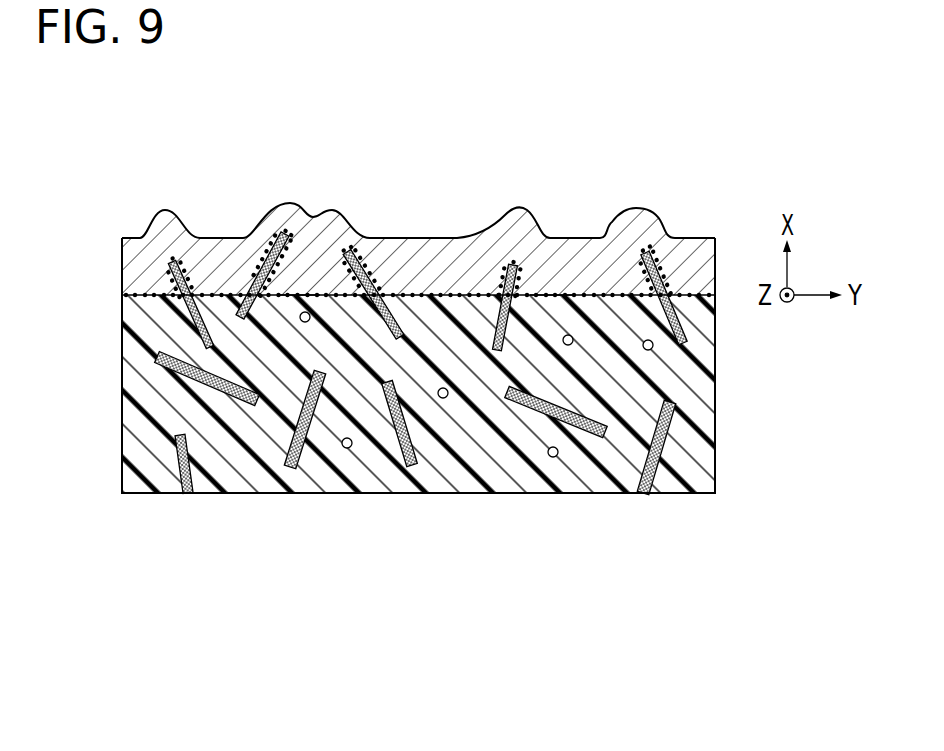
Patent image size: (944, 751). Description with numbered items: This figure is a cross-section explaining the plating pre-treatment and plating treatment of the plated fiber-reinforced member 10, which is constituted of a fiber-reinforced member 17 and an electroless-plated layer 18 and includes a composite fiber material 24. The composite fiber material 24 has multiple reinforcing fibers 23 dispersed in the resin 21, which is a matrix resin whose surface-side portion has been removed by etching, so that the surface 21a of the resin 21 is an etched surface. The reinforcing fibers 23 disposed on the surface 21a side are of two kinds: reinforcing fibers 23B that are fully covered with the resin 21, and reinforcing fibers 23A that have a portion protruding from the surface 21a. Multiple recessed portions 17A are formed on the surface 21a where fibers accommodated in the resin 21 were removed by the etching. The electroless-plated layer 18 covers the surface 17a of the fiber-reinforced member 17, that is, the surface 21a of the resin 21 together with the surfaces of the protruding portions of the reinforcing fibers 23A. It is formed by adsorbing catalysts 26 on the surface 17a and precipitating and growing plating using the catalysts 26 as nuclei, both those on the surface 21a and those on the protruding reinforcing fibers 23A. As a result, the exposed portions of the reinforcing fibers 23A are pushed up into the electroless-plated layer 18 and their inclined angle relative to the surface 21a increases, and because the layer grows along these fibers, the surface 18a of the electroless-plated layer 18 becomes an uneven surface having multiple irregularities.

The plated fiber-reinforced member 10 is at (122, 185).
The fiber-reinforced member 17 is at (715, 465).
The recessed portions 17A is at (452, 297).
The surface of the fiber-reinforced member 17a is at (552, 297).
The electroless-plated layer 18 is at (415, 250).
The surface of the electroless-plated layer 18a is at (370, 237).
The resin 21 is at (500, 483).
The surface of the resin 21a is at (296, 298).
The reinforcing fibers 23 is at (471, 553).
The reinforcing fibers having a protruding portion 23A is at (360, 300).
The reinforcing fibers fully covered with the resin 23B is at (443, 398).
The composite fiber material 24 is at (516, 600).
The catalysts 26 is at (498, 288).